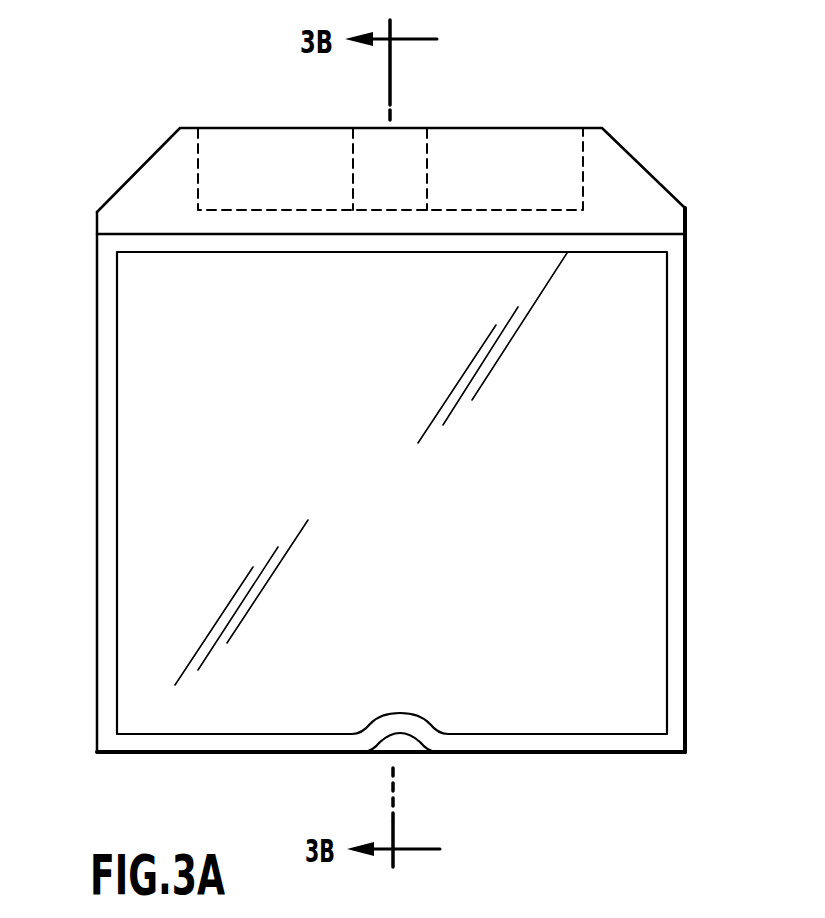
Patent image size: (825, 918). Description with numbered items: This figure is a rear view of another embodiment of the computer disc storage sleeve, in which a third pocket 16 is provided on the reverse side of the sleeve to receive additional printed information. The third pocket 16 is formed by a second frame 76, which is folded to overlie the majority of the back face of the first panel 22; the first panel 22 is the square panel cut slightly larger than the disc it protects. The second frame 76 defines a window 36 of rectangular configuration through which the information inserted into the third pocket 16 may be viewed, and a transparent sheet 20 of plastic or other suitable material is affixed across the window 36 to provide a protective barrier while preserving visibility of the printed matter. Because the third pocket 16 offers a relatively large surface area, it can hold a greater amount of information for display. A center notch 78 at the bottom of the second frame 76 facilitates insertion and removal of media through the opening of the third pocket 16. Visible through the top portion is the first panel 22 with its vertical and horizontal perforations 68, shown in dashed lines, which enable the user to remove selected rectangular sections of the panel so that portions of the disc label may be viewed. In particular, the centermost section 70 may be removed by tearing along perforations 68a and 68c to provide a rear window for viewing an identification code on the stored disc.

The third pocket 16 is at (166, 218).
The transparent sheet 20 is at (223, 460).
The first panel 22 is at (641, 216).
The window 36 is at (389, 379).
The perforations 68 is at (198, 175).
The perforation 68a is at (428, 163).
The perforation 68c is at (353, 150).
The centermost section 70 is at (407, 176).
The second frame 76 is at (686, 451).
The center notch 78 is at (402, 734).